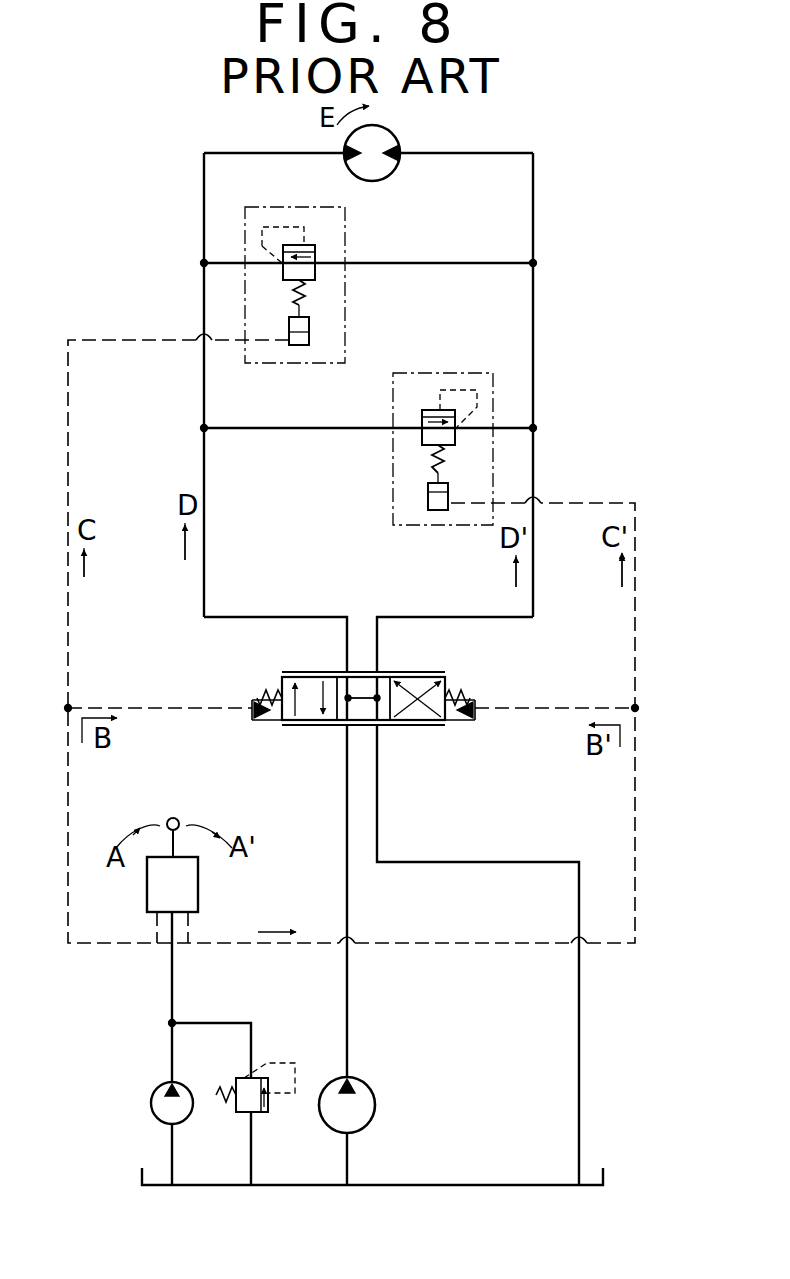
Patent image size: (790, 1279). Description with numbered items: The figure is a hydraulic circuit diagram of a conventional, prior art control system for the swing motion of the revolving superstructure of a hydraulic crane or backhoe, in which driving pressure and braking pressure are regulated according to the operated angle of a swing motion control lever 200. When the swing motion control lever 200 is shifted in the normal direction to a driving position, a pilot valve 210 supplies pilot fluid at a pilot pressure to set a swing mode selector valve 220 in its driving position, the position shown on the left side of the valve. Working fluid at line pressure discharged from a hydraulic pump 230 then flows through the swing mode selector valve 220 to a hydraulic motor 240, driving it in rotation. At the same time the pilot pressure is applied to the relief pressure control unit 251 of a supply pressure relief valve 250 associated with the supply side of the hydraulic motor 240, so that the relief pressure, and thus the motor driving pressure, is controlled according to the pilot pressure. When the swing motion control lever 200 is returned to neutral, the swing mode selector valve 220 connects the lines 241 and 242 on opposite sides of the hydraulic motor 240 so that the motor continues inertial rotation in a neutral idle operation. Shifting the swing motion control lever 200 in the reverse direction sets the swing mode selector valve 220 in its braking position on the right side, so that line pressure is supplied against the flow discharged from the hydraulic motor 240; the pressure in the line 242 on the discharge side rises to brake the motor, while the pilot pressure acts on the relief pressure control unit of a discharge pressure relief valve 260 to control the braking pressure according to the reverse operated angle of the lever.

The swing motion control lever 200 is at (175, 817).
The pilot valve 210 is at (198, 887).
The swing mode selector valve 220 is at (445, 672).
The hydraulic pump 230 is at (375, 1103).
The hydraulic motor 240 is at (393, 131).
The line 241 is at (204, 220).
The line 242 is at (535, 198).
The supply pressure relief valve 250 is at (337, 309).
The relief pressure control unit 251 is at (300, 345).
The discharge pressure relief valve 260 is at (467, 372).